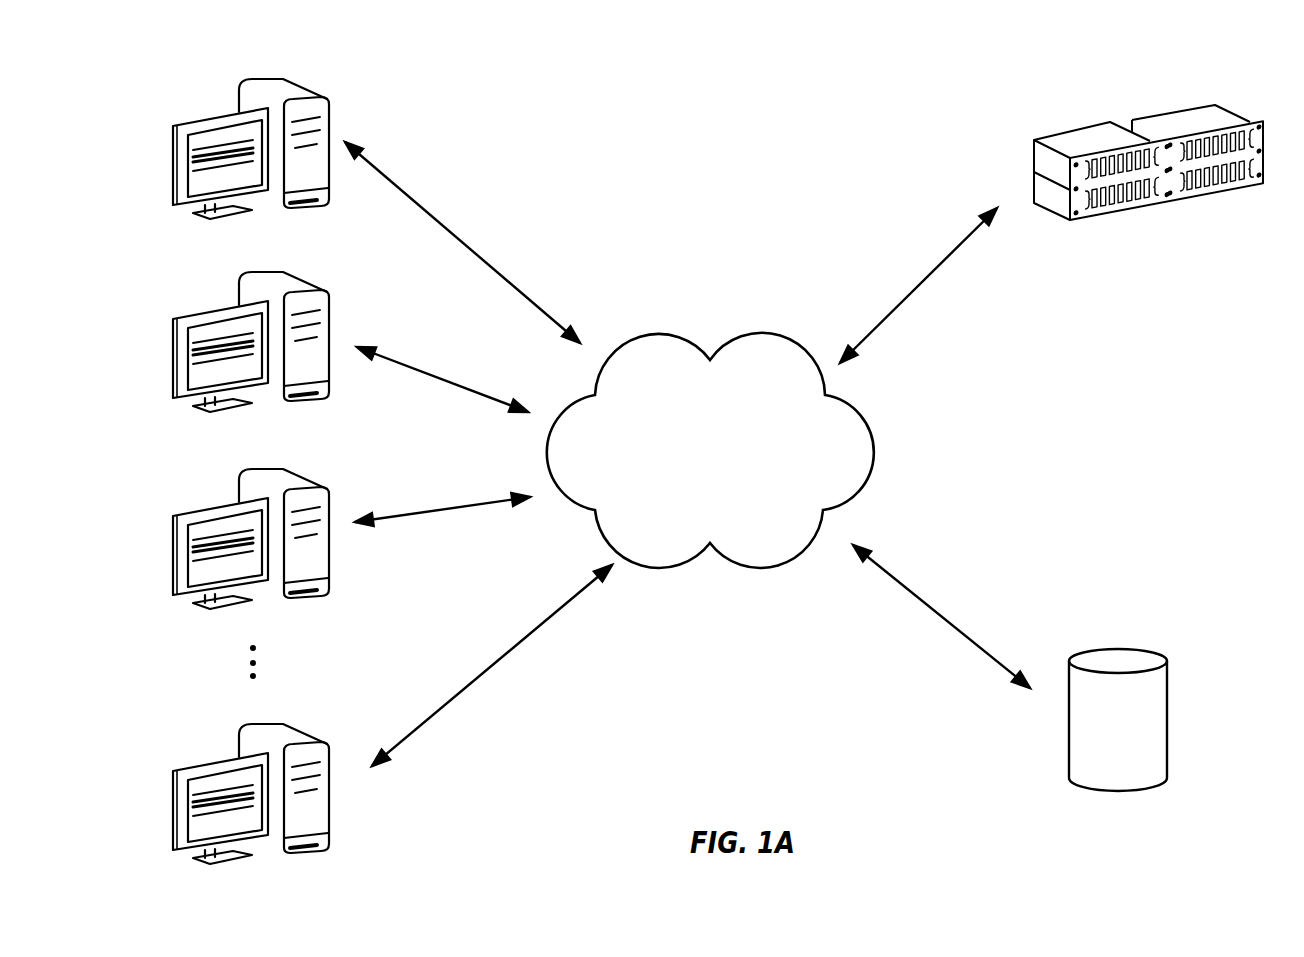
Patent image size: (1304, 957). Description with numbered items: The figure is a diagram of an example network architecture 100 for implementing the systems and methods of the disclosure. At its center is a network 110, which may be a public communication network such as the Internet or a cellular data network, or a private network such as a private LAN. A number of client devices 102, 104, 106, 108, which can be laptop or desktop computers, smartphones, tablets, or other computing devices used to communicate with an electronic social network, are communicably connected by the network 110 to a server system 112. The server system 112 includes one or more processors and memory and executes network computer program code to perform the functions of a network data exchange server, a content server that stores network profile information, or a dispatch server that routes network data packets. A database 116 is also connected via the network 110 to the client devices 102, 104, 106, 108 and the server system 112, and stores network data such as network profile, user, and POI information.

The network architecture 100 is at (706, 154).
The client device 102 is at (320, 93).
The client device 104 is at (320, 286).
The client device 106 is at (320, 483).
The client device 108 is at (320, 738).
The network 110 is at (710, 450).
The server system 112 is at (1197, 112).
The database 116 is at (1125, 655).